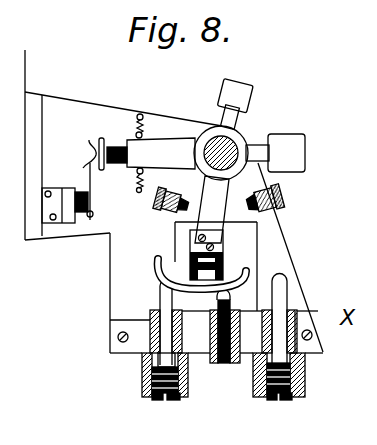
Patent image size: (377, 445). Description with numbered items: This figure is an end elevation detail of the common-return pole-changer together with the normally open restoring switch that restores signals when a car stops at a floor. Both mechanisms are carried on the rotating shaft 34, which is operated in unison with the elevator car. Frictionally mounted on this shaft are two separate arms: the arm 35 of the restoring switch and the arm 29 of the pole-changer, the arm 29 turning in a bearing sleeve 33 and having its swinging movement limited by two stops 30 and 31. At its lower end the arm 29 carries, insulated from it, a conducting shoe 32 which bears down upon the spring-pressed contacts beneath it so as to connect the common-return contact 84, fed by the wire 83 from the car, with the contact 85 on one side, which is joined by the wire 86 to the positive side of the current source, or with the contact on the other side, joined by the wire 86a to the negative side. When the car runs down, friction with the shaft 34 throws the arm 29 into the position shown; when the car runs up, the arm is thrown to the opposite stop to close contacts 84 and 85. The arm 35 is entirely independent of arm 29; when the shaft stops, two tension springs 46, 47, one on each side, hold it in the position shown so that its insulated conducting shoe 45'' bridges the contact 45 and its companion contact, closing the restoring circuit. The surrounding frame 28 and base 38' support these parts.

The housing 28 is at (128, 263).
The arm of the common-return pole-changer 29 is at (217, 207).
The stop 30 is at (168, 206).
The stop 31 is at (290, 197).
The conducting shoe 32 is at (223, 266).
The bearing sleeve 33 is at (246, 139).
The rotating shaft 34 is at (218, 130).
The arm of the normally open restoring switch 35 is at (151, 153).
The contact 45 is at (70, 181).
The insulated conducting shoe 45'' is at (79, 141).
The tension spring 46 is at (137, 187).
The tension spring 47 is at (138, 125).
The wire 83 is at (235, 395).
The contact 84 is at (223, 295).
The contact 85 is at (160, 289).
The wire 86 is at (300, 397).
The wire 86a is at (185, 397).
The base 38' is at (120, 437).